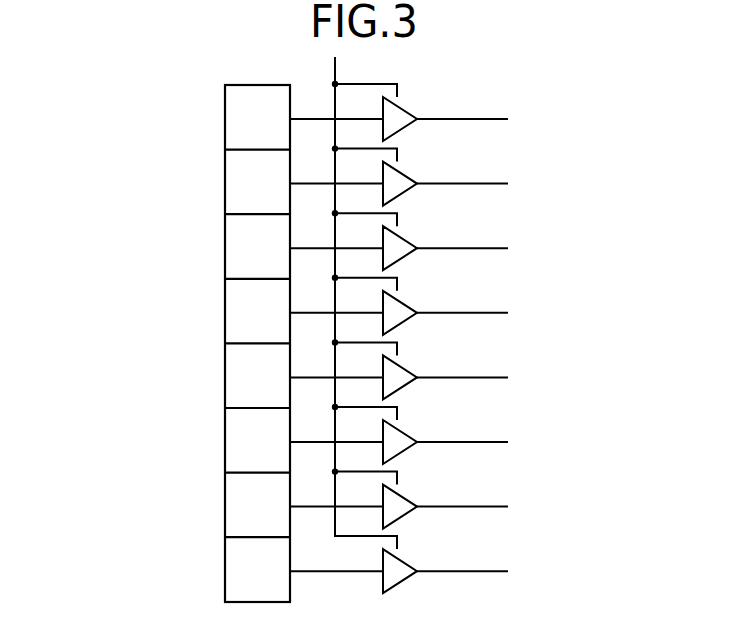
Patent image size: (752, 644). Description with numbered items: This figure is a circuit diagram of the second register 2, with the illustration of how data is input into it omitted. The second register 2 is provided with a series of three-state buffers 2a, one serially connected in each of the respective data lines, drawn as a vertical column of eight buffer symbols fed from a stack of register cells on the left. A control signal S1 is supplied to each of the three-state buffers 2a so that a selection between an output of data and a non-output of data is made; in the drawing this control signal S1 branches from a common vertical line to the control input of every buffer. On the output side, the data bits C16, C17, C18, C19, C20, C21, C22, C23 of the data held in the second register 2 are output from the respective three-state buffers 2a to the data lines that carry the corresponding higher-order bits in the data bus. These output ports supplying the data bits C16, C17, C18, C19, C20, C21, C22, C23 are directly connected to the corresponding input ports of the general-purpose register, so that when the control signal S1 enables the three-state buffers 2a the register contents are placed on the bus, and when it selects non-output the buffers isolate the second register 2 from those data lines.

The second register 2 is at (621, 167).
The three-state buffer 2a is at (408, 107).
The control signal S1 is at (158, 327).
The data bit C16 is at (490, 119).
The data bit C17 is at (490, 184).
The data bit C18 is at (490, 248).
The data bit C19 is at (490, 313).
The data bit C20 is at (490, 377).
The data bit C21 is at (490, 442).
The data bit C22 is at (490, 507).
The data bit C23 is at (490, 571).